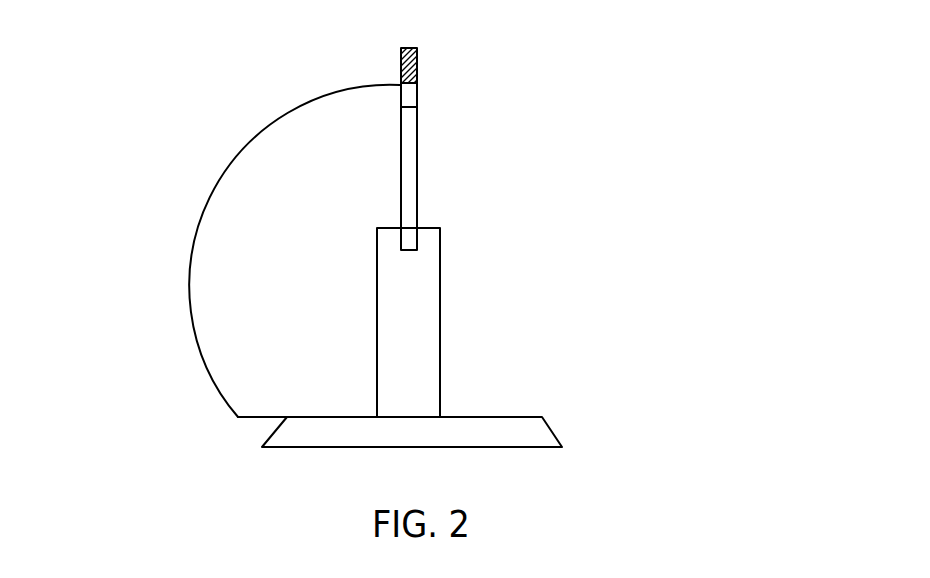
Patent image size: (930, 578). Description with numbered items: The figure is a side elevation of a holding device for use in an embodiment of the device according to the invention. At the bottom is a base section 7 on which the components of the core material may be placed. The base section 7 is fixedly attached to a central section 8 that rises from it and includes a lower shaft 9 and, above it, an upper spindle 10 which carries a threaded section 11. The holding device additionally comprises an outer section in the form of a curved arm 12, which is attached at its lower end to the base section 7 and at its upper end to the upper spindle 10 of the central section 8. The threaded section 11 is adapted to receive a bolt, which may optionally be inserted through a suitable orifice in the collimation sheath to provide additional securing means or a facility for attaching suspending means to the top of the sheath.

The base section 7 is at (287, 418).
The central section 8 is at (428, 267).
The lower shaft 9 is at (405, 273).
The upper spindle 10 is at (398, 94).
The threaded section 11 is at (421, 66).
The curved arm 12 is at (225, 175).